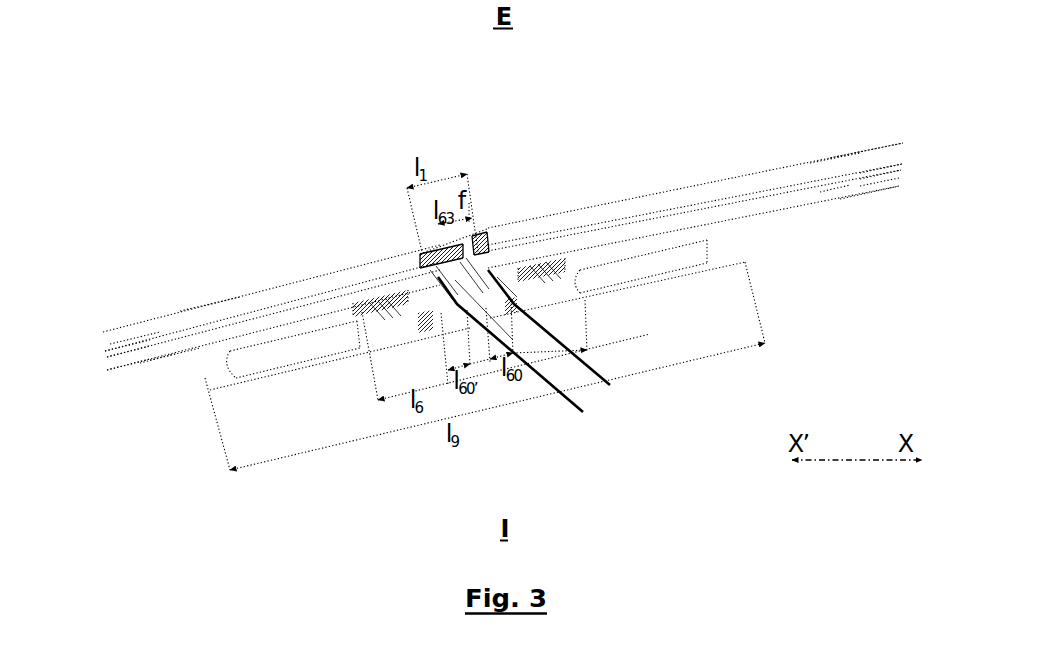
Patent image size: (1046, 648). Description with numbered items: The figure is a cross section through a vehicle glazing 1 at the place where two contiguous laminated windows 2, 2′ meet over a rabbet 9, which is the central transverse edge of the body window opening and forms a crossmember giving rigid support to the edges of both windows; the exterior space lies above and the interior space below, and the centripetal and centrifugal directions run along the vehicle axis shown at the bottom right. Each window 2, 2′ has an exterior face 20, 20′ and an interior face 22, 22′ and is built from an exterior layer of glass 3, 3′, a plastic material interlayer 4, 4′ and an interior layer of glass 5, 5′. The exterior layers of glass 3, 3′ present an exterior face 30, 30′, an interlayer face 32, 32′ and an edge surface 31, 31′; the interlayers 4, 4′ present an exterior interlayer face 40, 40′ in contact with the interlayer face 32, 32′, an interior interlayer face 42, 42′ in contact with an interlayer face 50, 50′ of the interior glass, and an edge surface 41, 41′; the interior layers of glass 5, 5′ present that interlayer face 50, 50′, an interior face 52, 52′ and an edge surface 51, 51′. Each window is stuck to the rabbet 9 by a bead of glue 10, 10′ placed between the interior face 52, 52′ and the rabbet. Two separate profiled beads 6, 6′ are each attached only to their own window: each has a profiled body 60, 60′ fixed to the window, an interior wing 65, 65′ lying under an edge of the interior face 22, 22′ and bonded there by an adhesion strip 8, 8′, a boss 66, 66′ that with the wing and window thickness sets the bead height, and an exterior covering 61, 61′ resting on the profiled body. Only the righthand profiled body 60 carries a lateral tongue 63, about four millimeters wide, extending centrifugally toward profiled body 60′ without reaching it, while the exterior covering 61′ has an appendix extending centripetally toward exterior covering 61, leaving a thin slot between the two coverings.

The glazing 1 is at (440, 93).
The window 2 is at (743, 131).
The window 2′ is at (250, 217).
The exterior layer of glass 3 is at (905, 155).
The exterior layer of glass 3′ is at (105, 343).
The plastic material interlayer 4 is at (898, 167).
The plastic material interlayer 4′ is at (107, 358).
The interior layer of glass 5 is at (897, 180).
The interior layer of glass 5′ is at (105, 369).
The profiled bead 6 is at (522, 385).
The profiled bead 6′ is at (385, 407).
The adhesion strip 8 is at (557, 266).
The adhesion strip 8′ is at (378, 307).
The rabbet 9 is at (734, 262).
The bead of glue 10 is at (632, 274).
The bead of glue 10′ is at (270, 366).
The exterior face 20 is at (848, 152).
The exterior face 20′ is at (220, 300).
The interior face 22 is at (850, 195).
The interior face 22′ is at (177, 356).
The exterior face 30 is at (889, 114).
The exterior face 30′ is at (205, 273).
The edge surface 31 is at (488, 250).
The edge surface 31′ is at (425, 264).
The interlayer face 32 is at (835, 178).
The interlayer face 32′ is at (135, 348).
The exterior interlayer face 40 is at (827, 127).
The exterior interlayer face 40′ is at (120, 295).
The edge surface 41 is at (490, 265).
The edge surface 41′ is at (425, 275).
The interior interlayer face 42 is at (835, 178).
The interior interlayer face 42′ is at (158, 347).
The interlayer face 50 is at (838, 244).
The interlayer face 50′ is at (137, 423).
The edge surface 51 is at (488, 272).
The edge surface 51′ is at (428, 286).
The interior face 52 is at (882, 222).
The interior face 52′ is at (185, 388).
The profiled body 60 is at (532, 335).
The profiled body 60′ is at (528, 359).
The exterior covering 61 is at (486, 255).
The exterior covering 61′ is at (422, 260).
The lateral tongue 63 is at (462, 268).
The interior wing 65 is at (520, 277).
The interior wing 65′ is at (406, 305).
The boss 66 is at (507, 300).
The boss 66′ is at (433, 322).